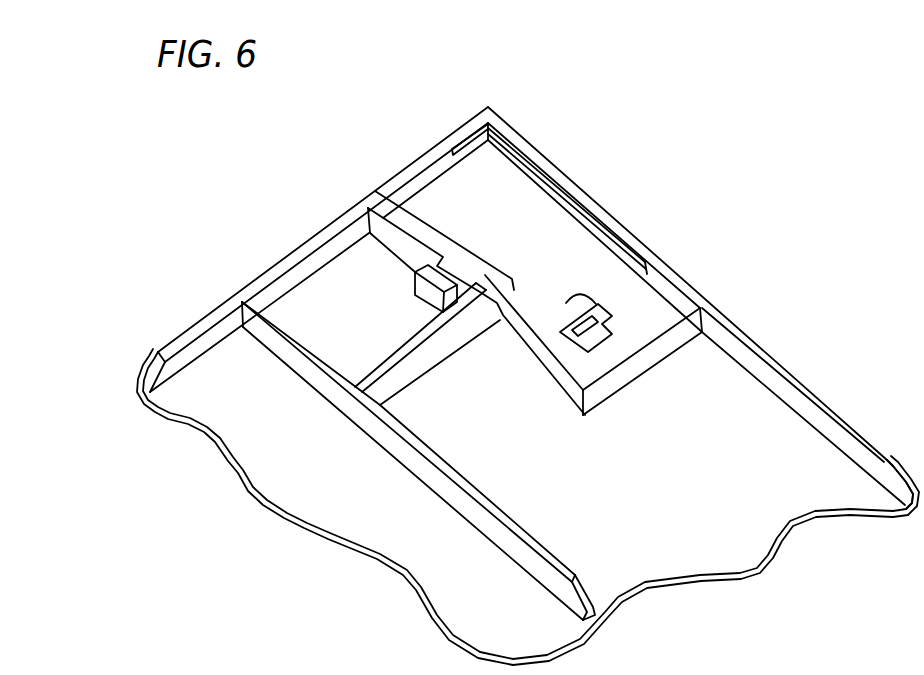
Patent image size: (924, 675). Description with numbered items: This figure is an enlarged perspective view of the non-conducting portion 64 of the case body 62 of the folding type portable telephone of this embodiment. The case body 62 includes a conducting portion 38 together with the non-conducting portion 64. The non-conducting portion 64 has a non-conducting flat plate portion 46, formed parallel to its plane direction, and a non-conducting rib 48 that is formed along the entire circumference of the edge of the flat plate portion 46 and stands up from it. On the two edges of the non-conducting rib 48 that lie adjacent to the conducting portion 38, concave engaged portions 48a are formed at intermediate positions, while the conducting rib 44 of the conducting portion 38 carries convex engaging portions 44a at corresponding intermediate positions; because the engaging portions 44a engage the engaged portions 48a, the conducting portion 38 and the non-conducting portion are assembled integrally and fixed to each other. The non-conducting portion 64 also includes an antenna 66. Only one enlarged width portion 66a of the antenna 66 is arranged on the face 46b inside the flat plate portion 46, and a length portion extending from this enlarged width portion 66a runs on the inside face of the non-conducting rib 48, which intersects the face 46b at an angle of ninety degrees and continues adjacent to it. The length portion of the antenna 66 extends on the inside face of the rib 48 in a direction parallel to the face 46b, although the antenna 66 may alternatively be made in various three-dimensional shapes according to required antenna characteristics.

The conducting portion 38 is at (845, 412).
The conducting rib 44 is at (780, 354).
The engaging portion 44a is at (478, 298).
The non-conducting flat plate portion 46 is at (549, 171).
The face 46b is at (505, 193).
The non-conducting rib 48 is at (650, 250).
The engaged portion 48a is at (435, 282).
The case body 62 is at (528, 367).
The non-conducting portion 64 is at (424, 153).
The antenna 66 is at (600, 233).
The enlarged width portion 66a is at (565, 300).